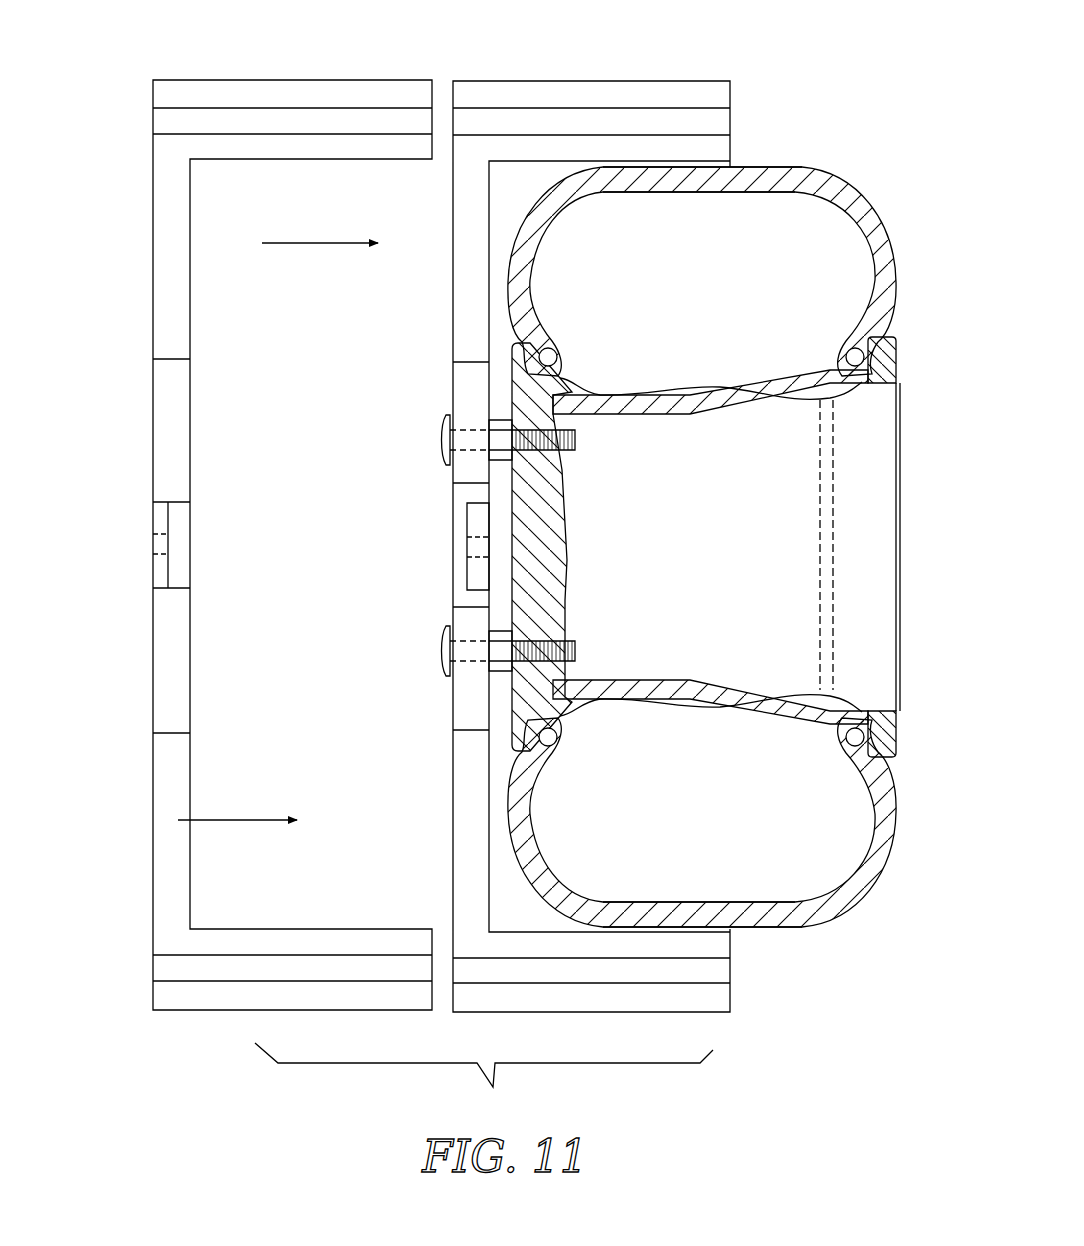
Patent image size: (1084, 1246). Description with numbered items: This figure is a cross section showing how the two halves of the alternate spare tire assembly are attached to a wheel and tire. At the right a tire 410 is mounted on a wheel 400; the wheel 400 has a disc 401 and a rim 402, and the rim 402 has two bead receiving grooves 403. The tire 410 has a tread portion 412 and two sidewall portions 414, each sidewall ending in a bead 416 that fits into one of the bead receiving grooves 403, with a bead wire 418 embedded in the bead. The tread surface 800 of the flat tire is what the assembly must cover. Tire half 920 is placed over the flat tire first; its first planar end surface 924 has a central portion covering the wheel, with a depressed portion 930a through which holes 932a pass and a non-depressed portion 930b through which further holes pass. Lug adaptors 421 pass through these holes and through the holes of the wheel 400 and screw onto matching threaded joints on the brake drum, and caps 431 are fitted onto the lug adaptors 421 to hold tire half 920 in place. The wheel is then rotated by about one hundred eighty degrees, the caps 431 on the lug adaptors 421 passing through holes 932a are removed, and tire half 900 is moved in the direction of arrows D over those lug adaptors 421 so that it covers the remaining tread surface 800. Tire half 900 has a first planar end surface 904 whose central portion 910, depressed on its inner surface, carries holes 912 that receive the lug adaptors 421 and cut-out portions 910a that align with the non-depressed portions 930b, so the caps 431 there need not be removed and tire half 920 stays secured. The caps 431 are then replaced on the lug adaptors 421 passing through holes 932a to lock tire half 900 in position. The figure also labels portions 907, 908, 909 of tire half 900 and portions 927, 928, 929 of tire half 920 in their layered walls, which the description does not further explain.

The wheel 400 is at (706, 547).
The disc 401 is at (560, 492).
The rim 402 is at (650, 418).
The bead receiving grooves 403 is at (750, 400).
The tire 410 is at (702, 513).
The tread portion 412 is at (750, 193).
The sidewall portions 414 is at (532, 257).
The bead 416 is at (566, 372).
The bead core 418 is at (552, 358).
The lug adaptor 421 is at (505, 415).
The cap 431 is at (440, 440).
The tread surface 800 is at (702, 513).
The tire half 900 is at (240, 363).
The first planar end surface 904 is at (195, 750).
The first layer of first supporting member 907 is at (242, 152).
The second layer of first supporting member 908 is at (282, 124).
The third layer of first supporting member 909 is at (323, 97).
The central portion 910 is at (160, 590).
The cut-out portions 910a is at (162, 412).
The holes 912 is at (162, 532).
The tire half 920 is at (428, 262).
The first planar end surface 924 is at (455, 776).
The first layer of second supporting member 927 is at (552, 153).
The second layer of second supporting member 928 is at (592, 125).
The third layer of second supporting member 929 is at (633, 97).
The depressed portion 930a is at (470, 510).
The non-depressed portion 930b is at (462, 393).
The holes 932a is at (470, 548).
The arrows D is at (237, 833).